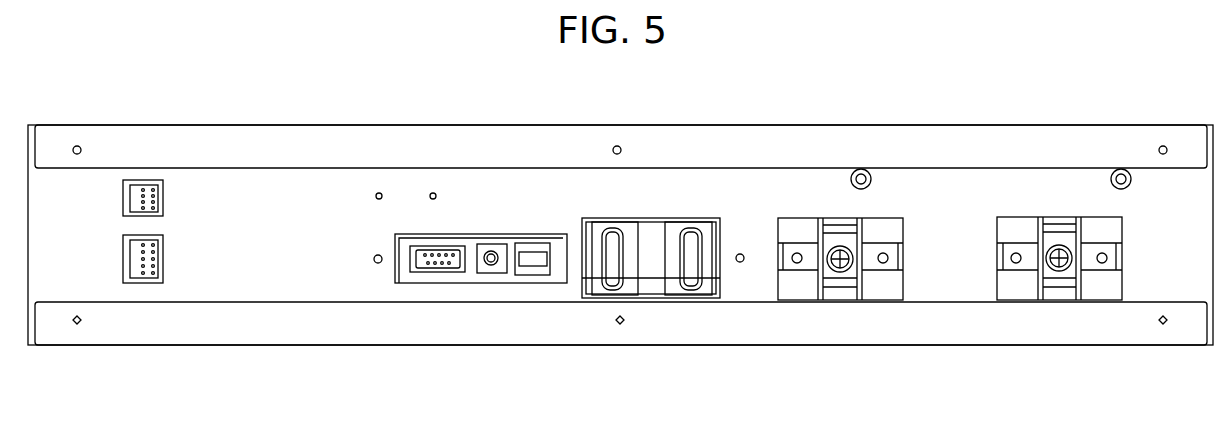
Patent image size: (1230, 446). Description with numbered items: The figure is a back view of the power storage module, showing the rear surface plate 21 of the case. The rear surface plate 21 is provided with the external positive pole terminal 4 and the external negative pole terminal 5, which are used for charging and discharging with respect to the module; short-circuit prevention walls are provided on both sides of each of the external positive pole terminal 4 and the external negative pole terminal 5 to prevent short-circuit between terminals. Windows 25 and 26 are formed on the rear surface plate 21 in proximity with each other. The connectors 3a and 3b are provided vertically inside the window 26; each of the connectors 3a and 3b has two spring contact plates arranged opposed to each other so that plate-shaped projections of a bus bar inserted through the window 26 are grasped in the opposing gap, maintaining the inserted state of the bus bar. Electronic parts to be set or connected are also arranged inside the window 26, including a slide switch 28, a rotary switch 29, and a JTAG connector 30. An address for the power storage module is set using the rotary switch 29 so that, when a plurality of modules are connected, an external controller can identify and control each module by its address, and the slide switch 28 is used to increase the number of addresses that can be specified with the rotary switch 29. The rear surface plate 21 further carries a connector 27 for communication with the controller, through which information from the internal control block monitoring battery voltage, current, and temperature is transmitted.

The rear surface plate 21 is at (225, 283).
The connector 27 is at (123, 198).
The window 26 is at (407, 275).
The JTAG connector 30 is at (428, 270).
The rotary switch 29 is at (490, 272).
The slide switch 28 is at (532, 275).
The window 25 is at (648, 265).
The connector 3a is at (612, 283).
The connector 3b is at (700, 292).
The external positive pole terminal 4 is at (848, 298).
The external negative pole terminal 5 is at (1044, 293).